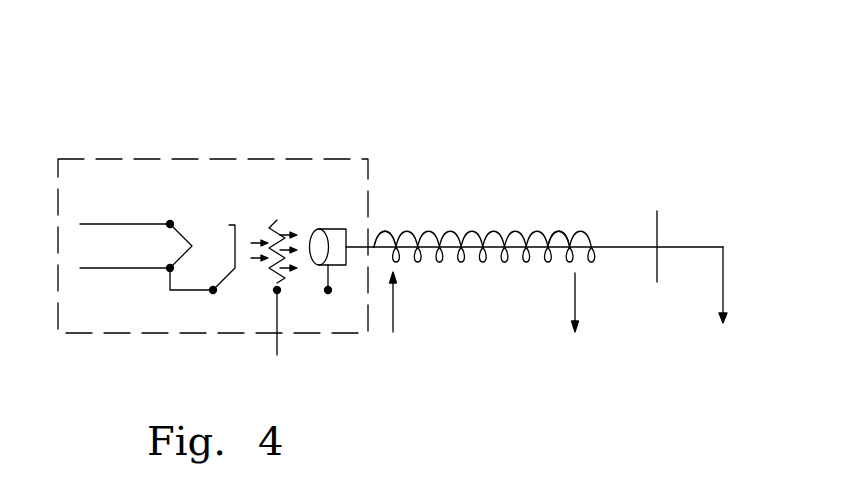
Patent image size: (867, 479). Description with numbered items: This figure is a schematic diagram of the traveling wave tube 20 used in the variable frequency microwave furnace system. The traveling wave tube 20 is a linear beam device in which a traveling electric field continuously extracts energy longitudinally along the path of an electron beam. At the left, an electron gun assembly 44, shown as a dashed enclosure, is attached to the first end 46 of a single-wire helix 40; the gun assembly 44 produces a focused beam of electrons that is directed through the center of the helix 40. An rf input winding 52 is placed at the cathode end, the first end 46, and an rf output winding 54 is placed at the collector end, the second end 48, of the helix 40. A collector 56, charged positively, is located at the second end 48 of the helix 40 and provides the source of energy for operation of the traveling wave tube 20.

The traveling wave tube 20 is at (159, 76).
The electron gun assembly 44 is at (283, 157).
The single-wire helix 40 is at (463, 233).
The first end of the helix 46 is at (392, 237).
The second end of the helix 48 is at (558, 228).
The rf input winding 52 is at (393, 310).
The rf output winding 54 is at (575, 308).
The collector 56 is at (657, 224).